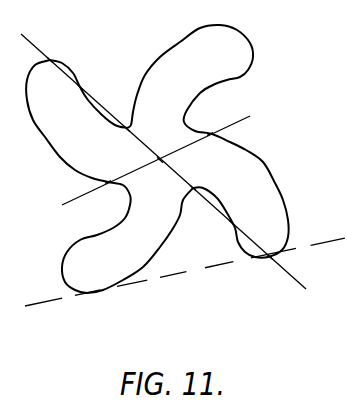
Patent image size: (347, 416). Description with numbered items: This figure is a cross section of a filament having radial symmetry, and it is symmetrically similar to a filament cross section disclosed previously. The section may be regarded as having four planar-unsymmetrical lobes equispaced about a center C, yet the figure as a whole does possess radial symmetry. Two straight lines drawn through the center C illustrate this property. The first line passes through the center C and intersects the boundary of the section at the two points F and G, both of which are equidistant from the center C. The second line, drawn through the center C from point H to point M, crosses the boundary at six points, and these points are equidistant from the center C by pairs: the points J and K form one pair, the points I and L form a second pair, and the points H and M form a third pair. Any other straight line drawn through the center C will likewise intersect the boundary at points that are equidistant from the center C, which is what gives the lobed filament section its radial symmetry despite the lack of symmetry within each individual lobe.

The boundary point H is at (53, 48).
The boundary point I is at (85, 79).
The boundary point J is at (135, 122).
The boundary point G is at (211, 124).
The center C is at (156, 171).
The boundary point F is at (108, 195).
The boundary point K is at (199, 178).
The boundary point L is at (225, 233).
The boundary point M is at (264, 271).